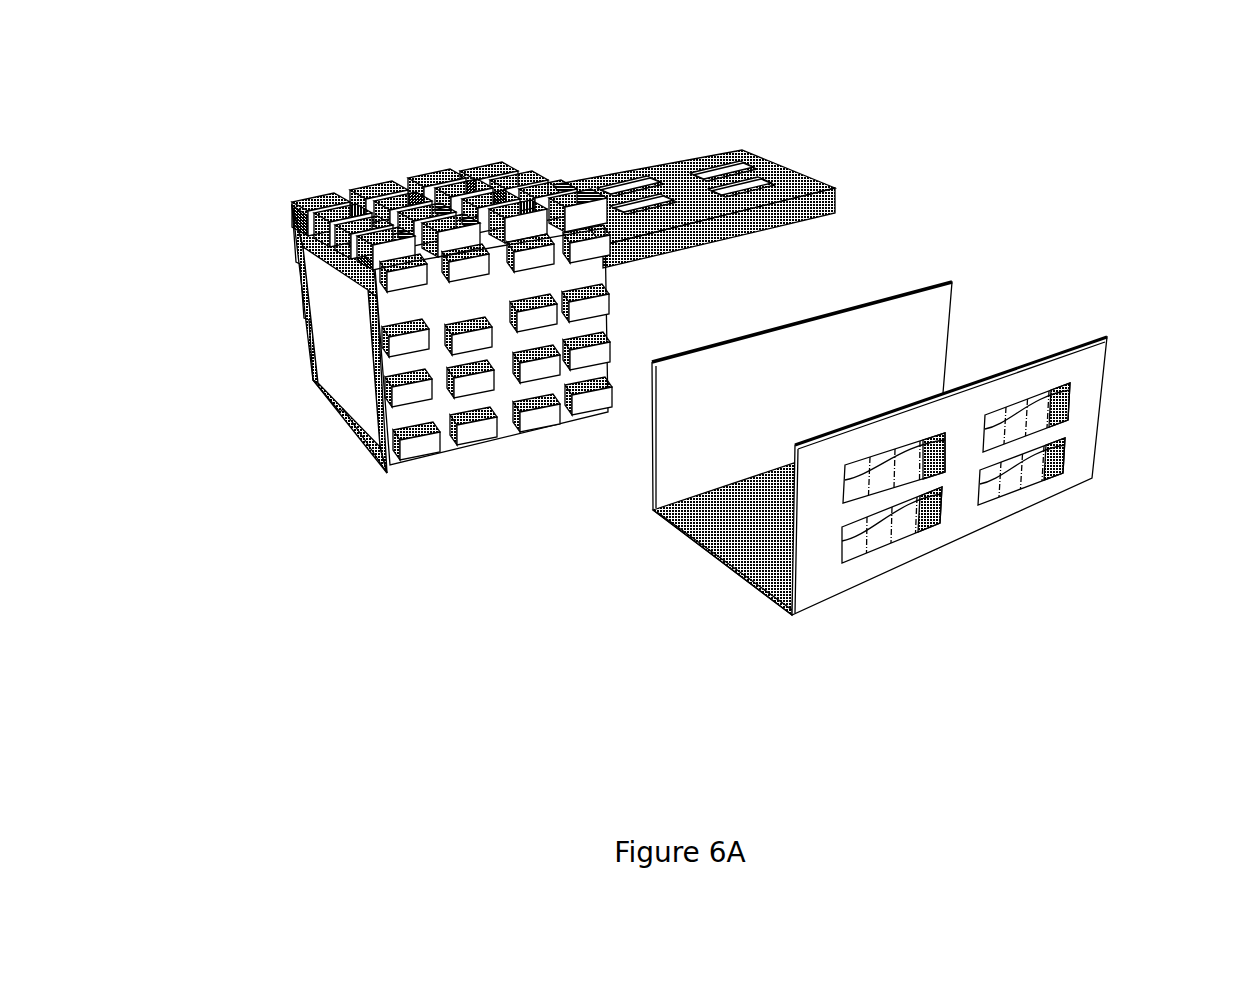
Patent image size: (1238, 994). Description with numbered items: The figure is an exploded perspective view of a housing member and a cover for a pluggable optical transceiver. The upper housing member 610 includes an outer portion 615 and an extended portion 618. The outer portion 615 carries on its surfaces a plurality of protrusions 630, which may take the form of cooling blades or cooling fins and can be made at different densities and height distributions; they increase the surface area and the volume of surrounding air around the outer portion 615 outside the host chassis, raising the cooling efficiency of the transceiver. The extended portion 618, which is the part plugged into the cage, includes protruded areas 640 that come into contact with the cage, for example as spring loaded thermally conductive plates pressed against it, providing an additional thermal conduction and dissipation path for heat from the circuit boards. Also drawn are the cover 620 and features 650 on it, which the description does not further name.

The upper housing member 610 is at (245, 152).
The outer portion 615 is at (381, 460).
The extended portion 618 is at (838, 200).
The side panel 620 is at (1071, 473).
The protrusions 630 is at (364, 185).
The protruded areas 640 is at (606, 170).
The pockets 650 is at (1019, 485).